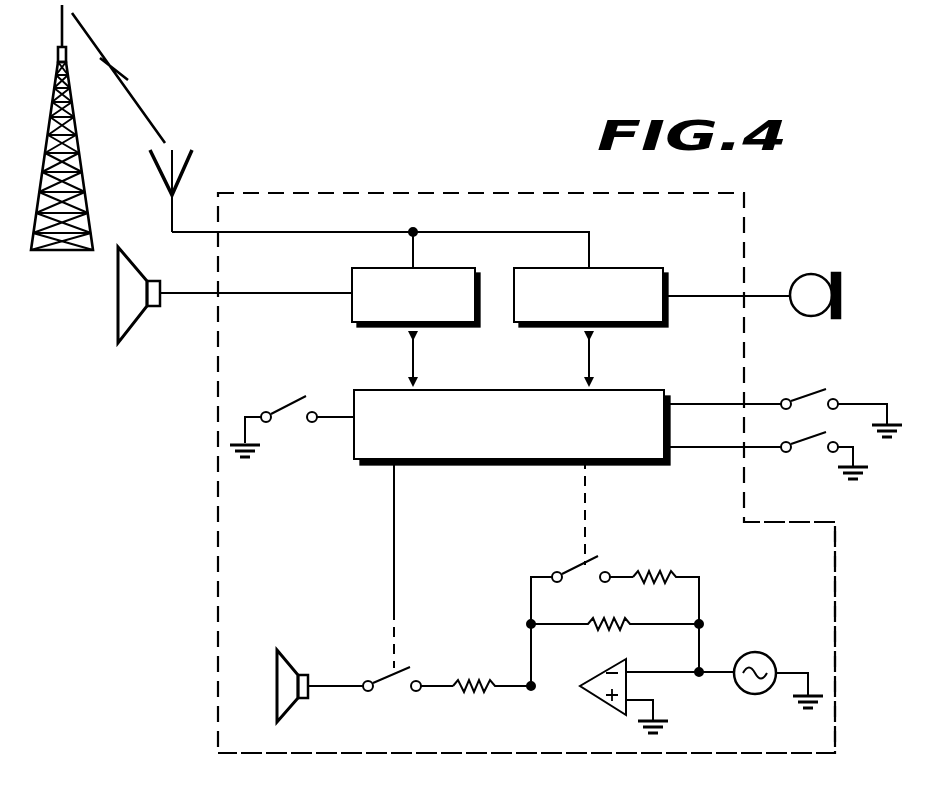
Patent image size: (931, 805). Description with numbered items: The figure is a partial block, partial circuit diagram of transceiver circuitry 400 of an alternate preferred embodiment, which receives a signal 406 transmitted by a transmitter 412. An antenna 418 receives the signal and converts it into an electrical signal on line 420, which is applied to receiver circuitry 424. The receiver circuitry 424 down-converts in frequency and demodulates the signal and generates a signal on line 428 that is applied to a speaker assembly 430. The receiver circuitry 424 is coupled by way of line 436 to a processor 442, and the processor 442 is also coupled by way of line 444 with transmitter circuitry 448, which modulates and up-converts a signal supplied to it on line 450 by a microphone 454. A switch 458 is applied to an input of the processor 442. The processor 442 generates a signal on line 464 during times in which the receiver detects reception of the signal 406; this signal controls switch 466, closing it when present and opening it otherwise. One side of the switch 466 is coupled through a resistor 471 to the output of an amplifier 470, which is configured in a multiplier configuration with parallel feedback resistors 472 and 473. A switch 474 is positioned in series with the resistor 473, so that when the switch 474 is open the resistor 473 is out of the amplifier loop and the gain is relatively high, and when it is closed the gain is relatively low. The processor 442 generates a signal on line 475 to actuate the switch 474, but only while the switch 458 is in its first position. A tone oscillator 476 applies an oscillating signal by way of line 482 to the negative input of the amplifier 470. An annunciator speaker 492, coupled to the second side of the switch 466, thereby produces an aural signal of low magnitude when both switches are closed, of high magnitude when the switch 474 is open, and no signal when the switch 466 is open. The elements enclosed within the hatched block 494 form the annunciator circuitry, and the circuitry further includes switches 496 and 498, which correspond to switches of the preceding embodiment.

The transceiver circuitry 400 is at (540, 167).
The signal 406 is at (95, 42).
The transmitter 412 is at (88, 178).
The antenna 418 is at (190, 160).
The line 420 is at (540, 232).
The receiver circuitry 424 is at (445, 268).
The line 428 is at (200, 296).
The speaker assembly 430 is at (117, 308).
The line 436 is at (414, 356).
The processor 442 is at (508, 389).
The line 444 is at (590, 356).
The transmitter circuitry 448 is at (660, 268).
The line 450 is at (765, 290).
The microphone 454 is at (840, 286).
The switch 458 is at (283, 403).
The line 464 is at (396, 590).
The switch 466 is at (397, 690).
The amplifier 470 is at (597, 700).
The resistor 471 is at (483, 680).
The feedback resistor 472 is at (597, 619).
The feedback resistor 473 is at (662, 571).
The switch 474 is at (575, 572).
The line 475 is at (586, 488).
The tone oscillator 476 is at (755, 652).
The line 482 is at (720, 678).
The annunciator speaker 492 is at (275, 672).
The block 494 is at (837, 598).
The switch 496 is at (810, 397).
The switch 498 is at (808, 442).